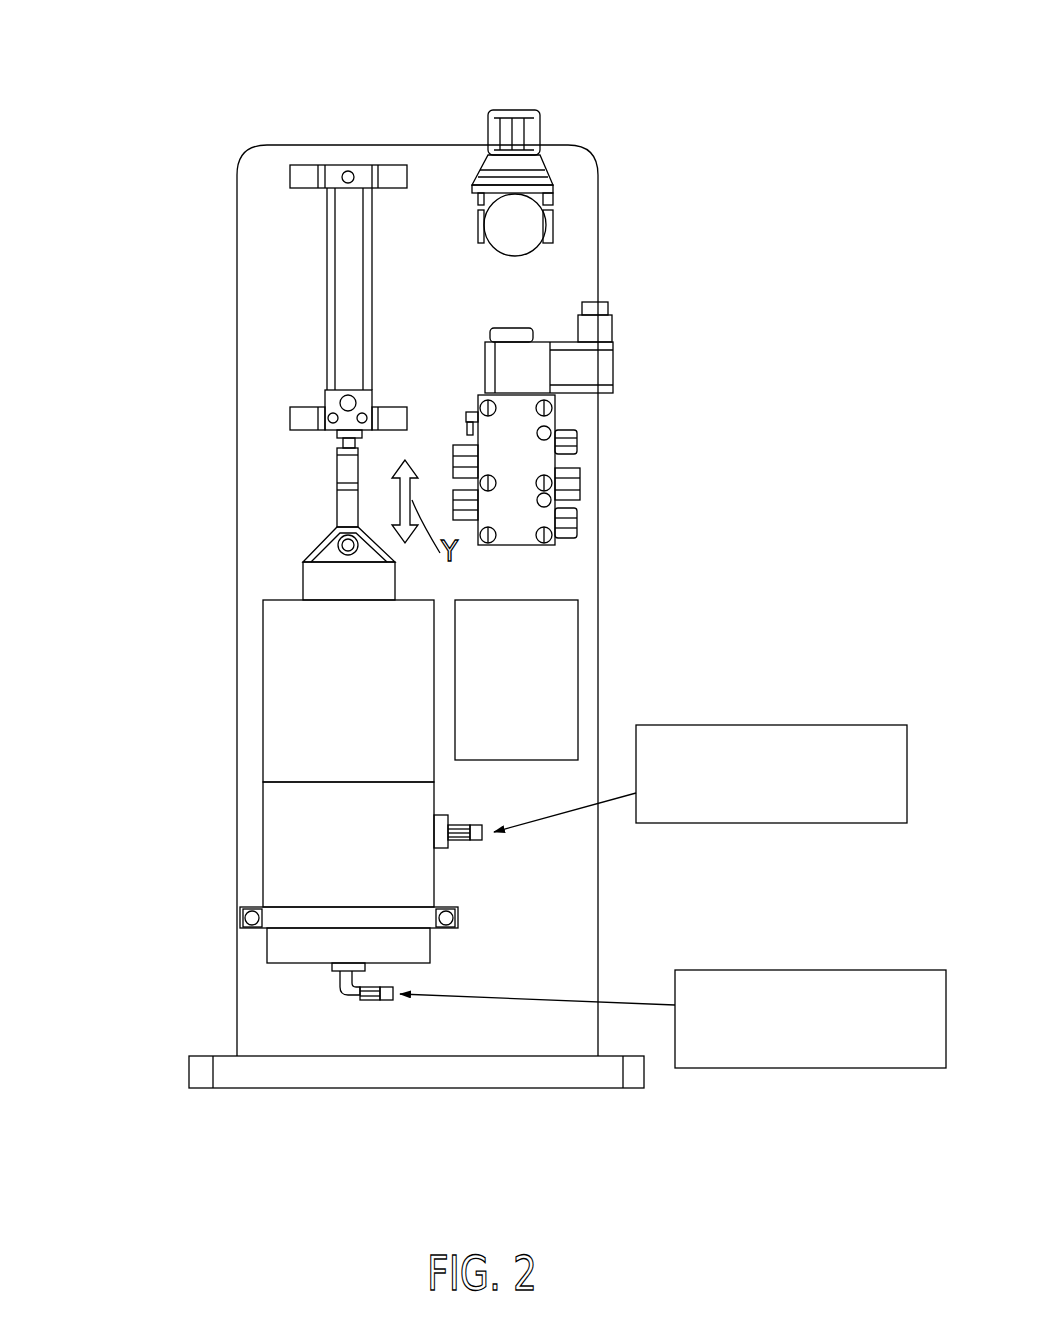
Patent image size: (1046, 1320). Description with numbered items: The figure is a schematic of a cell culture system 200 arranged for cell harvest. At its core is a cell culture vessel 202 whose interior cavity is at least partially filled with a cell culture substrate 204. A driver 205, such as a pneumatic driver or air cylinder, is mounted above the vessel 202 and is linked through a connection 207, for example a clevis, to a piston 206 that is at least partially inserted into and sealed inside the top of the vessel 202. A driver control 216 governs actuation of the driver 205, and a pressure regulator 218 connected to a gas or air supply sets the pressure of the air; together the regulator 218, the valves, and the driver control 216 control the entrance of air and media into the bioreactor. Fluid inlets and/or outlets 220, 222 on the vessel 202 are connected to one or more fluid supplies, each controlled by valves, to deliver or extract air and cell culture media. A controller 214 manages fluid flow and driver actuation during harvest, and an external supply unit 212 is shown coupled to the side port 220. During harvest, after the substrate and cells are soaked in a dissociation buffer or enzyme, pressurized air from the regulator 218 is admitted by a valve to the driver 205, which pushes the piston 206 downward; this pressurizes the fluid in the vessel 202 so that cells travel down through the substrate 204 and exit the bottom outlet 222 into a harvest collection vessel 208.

The cell culture system 200 is at (118, 78).
The cell culture vessel 202 is at (367, 705).
The cell culture substrate 204 is at (369, 867).
The driver 205 is at (345, 300).
The piston 206 is at (323, 587).
The connection 207 is at (348, 510).
The harvest collection vessel 208 is at (825, 1033).
The vacuum source 212 is at (785, 788).
The controller 214 is at (537, 705).
The driver control 216 is at (529, 375).
The pressure regulator 218 is at (524, 228).
The fluid inlet and/or outlet 220 is at (445, 840).
The fluid inlet and/or outlet 222 is at (330, 968).